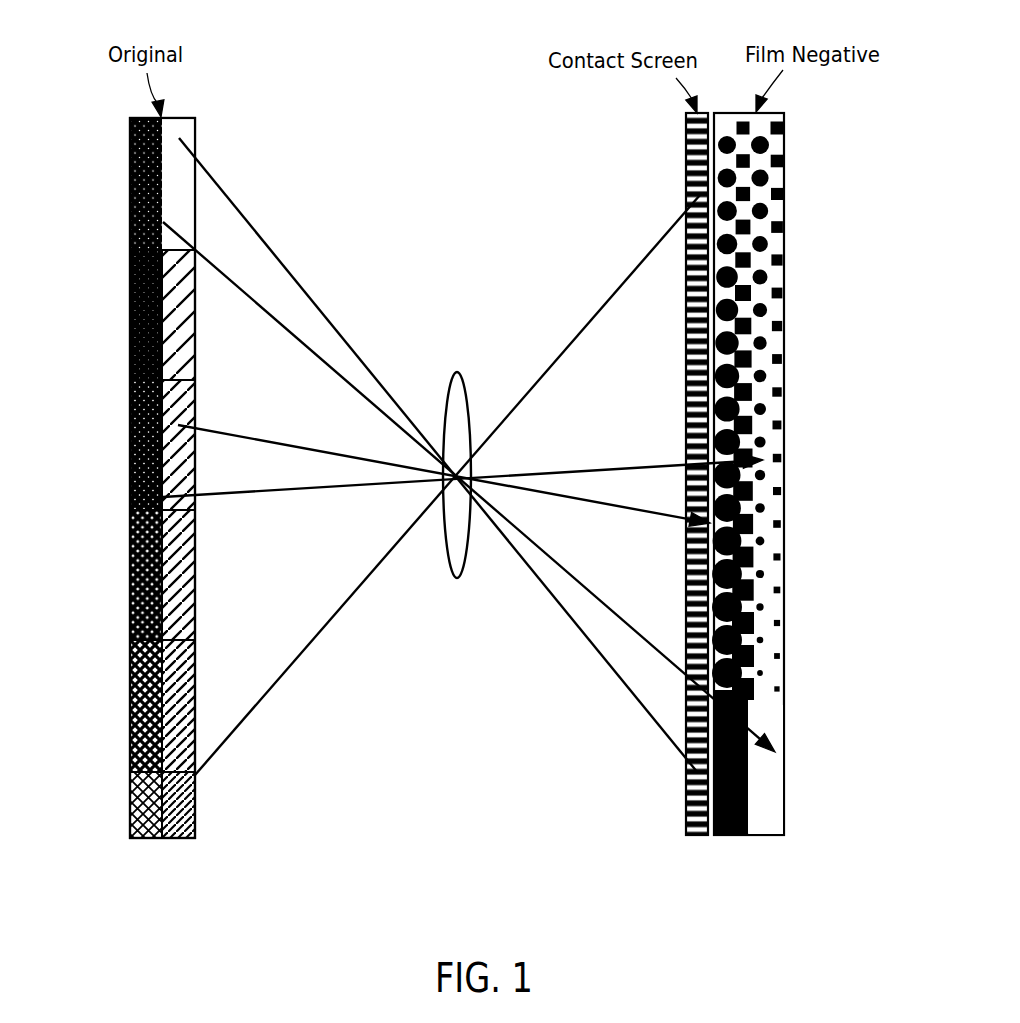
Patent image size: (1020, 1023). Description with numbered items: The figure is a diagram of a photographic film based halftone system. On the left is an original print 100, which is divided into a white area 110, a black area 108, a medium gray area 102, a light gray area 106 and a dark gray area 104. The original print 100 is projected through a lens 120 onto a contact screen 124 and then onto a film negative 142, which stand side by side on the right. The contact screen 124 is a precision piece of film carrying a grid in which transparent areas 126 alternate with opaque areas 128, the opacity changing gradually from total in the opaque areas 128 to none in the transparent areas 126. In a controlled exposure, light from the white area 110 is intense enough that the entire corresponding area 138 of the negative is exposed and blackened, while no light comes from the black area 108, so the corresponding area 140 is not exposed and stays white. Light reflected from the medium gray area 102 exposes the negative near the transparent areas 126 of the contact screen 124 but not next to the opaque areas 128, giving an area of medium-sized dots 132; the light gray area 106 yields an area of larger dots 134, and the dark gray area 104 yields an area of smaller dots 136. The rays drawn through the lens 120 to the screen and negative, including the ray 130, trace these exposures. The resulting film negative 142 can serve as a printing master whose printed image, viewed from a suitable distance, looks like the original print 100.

The original print 100 is at (130, 710).
The medium gray area 102 is at (158, 840).
The dark gray area 104 is at (130, 391).
The light gray area 106 is at (197, 396).
The black area 108 is at (130, 190).
The white area 110 is at (197, 130).
The lens 120 is at (457, 372).
The contact screen 124 is at (686, 125).
The transparent areas 126 is at (686, 397).
The opaque areas 128 is at (687, 454).
The light ray to film negative 130 is at (785, 707).
The area of medium-sized dots 132 is at (786, 143).
The area of larger dots 134 is at (713, 539).
The area of smaller dots 136 is at (775, 476).
The exposed area 138 is at (728, 836).
The unexposed area 140 is at (785, 812).
The film negative 142 is at (785, 297).